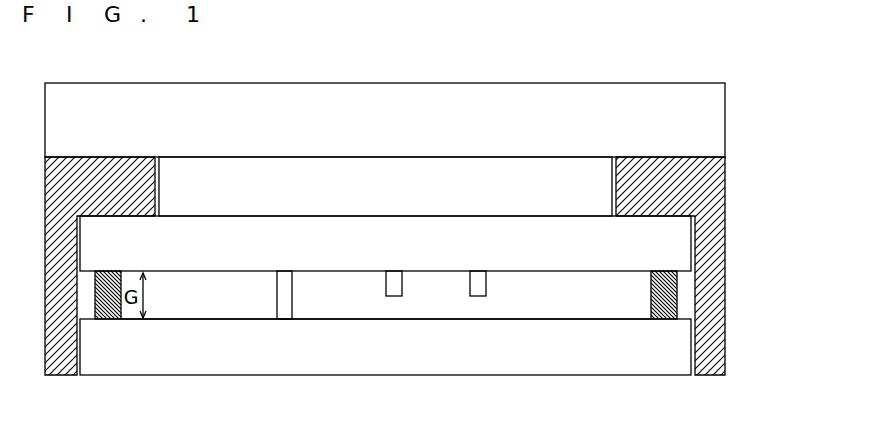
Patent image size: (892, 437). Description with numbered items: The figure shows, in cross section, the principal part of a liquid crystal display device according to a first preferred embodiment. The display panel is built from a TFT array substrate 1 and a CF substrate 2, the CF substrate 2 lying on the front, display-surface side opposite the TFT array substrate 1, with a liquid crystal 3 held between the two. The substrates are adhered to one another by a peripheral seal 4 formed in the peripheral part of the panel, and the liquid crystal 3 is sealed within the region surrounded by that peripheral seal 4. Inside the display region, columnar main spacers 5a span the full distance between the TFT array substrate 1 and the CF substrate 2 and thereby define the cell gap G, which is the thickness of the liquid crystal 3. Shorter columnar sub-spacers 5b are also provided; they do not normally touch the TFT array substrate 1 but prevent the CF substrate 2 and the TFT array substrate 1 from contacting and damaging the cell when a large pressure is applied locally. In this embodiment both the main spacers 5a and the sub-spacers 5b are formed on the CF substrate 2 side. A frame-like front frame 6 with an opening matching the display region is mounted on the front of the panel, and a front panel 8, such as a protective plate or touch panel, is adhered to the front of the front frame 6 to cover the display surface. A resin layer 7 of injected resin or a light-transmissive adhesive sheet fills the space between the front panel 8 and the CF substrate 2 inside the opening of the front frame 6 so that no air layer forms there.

The TFT array substrate 1 is at (173, 360).
The CF substrate 2 is at (227, 248).
The liquid crystal 3 is at (552, 305).
The peripheral seal 4 is at (652, 302).
The main spacer 5a is at (288, 300).
The sub-spacer 5b is at (472, 286).
The front frame 6 is at (717, 213).
The resin layer 7 is at (428, 177).
The front panel 8 is at (332, 93).